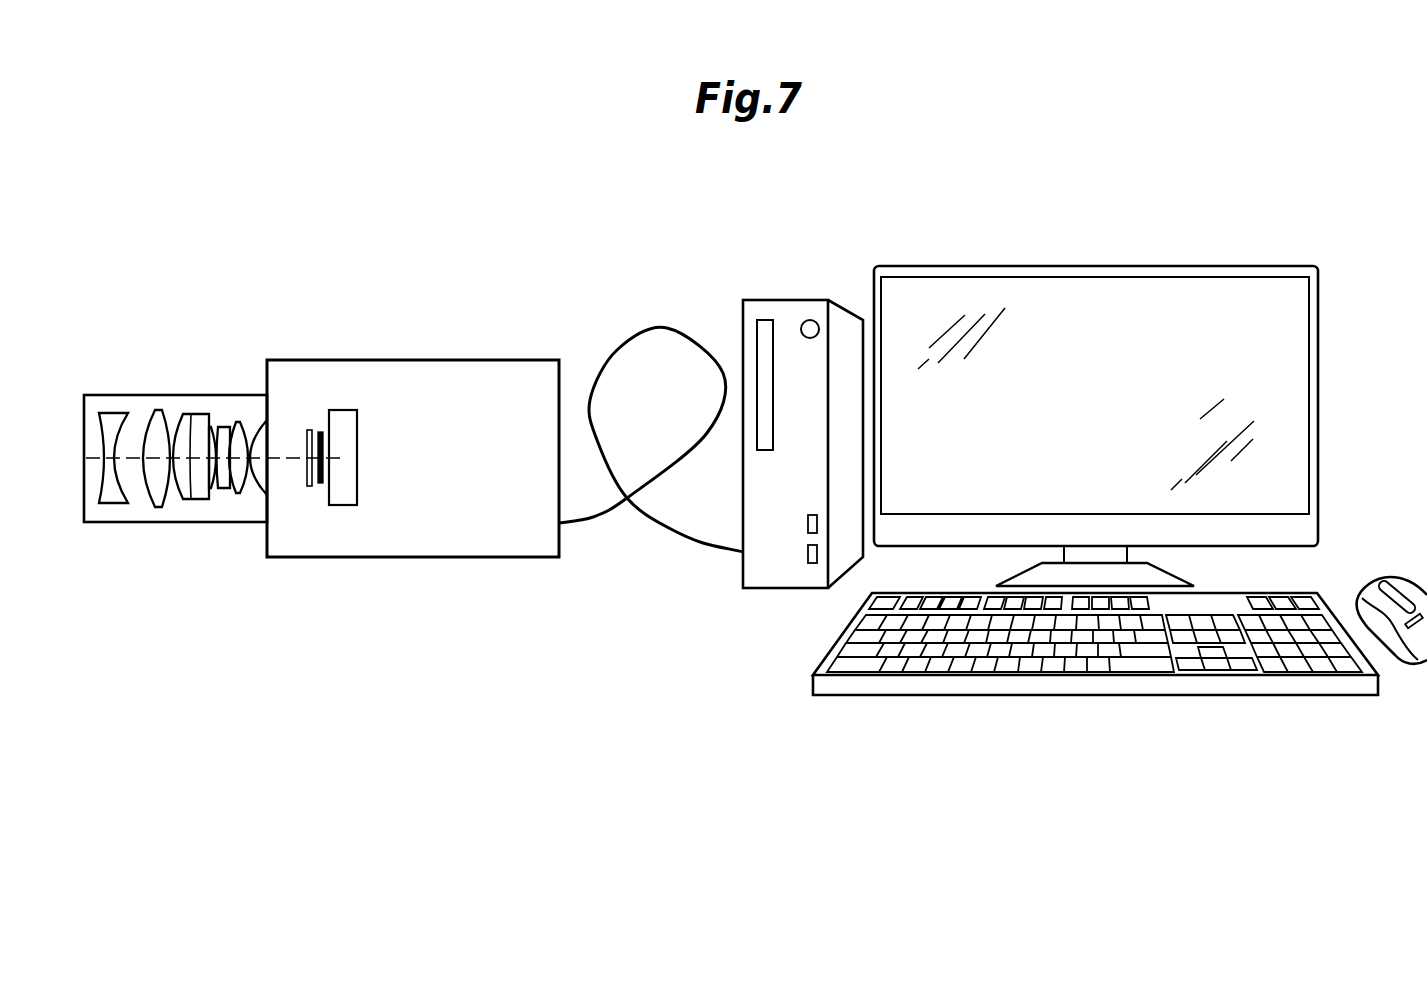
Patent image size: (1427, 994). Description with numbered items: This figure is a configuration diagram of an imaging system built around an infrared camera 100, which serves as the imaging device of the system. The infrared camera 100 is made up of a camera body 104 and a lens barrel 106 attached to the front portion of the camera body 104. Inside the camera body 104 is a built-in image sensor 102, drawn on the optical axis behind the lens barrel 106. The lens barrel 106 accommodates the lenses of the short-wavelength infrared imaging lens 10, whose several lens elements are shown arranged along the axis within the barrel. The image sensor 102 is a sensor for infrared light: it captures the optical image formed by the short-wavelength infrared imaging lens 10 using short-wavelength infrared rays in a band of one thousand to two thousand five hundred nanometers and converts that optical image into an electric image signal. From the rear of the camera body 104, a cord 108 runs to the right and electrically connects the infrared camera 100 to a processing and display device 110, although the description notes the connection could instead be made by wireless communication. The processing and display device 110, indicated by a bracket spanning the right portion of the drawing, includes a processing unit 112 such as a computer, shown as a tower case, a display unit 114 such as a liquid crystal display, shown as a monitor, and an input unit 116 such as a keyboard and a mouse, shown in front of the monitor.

The short-wavelength infrared imaging lens 10 is at (197, 398).
The infrared camera 100 is at (395, 361).
The image sensor 102 is at (349, 452).
The camera body 104 is at (513, 359).
The lens barrel 106 is at (165, 523).
The cord 108 is at (665, 327).
The processing and display device 110 is at (1426, 219).
The processing unit 112 is at (764, 577).
The display unit 114 is at (1302, 375).
The input unit 116 is at (1172, 676).